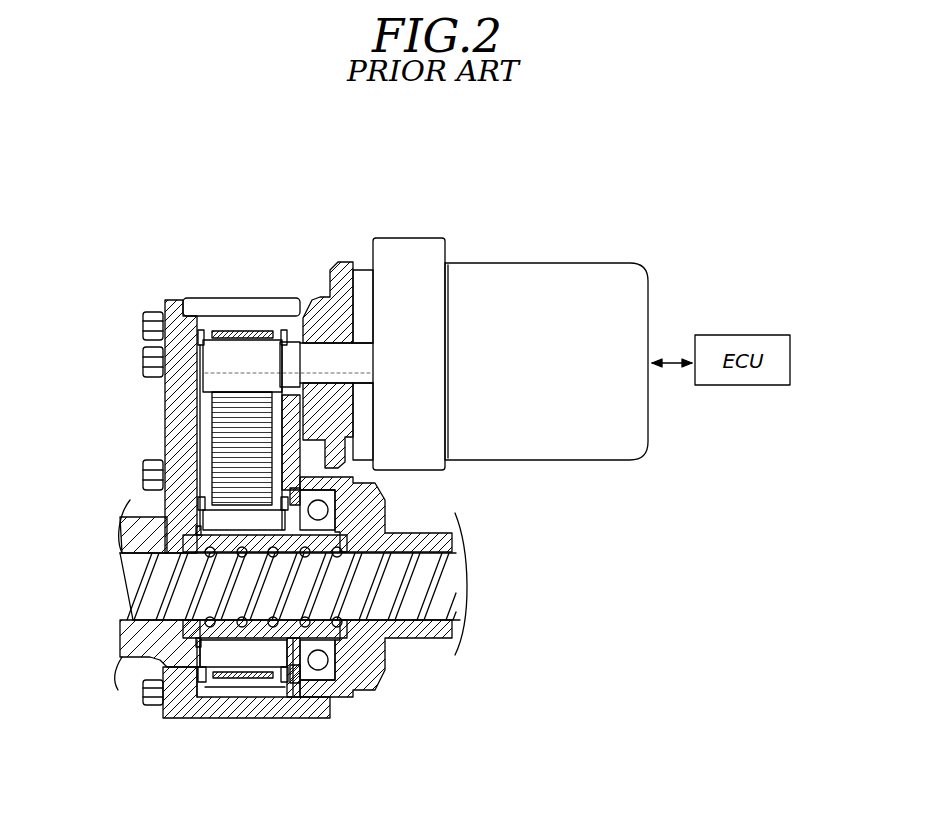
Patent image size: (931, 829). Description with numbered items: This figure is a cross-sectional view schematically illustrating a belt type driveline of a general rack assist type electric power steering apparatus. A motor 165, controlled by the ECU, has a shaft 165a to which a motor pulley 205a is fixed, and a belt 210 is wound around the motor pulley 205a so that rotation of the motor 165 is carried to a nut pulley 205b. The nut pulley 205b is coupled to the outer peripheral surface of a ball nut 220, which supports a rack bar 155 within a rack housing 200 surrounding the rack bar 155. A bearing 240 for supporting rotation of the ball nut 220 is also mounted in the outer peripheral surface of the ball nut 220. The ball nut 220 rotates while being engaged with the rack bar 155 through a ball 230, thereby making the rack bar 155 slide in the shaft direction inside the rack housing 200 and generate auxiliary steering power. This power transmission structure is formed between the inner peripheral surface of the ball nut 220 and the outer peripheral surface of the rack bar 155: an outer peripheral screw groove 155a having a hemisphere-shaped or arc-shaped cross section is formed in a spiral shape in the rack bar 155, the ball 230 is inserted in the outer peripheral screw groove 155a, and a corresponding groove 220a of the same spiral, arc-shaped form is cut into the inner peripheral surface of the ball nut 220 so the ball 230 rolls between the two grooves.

The rack bar 155 is at (140, 594).
The outer peripheral screw groove 155a is at (415, 605).
The motor 165 is at (543, 277).
The shaft of the motor 165a is at (328, 353).
The rack housing 200 is at (244, 718).
The motor pulley 205a is at (243, 352).
The nut pulley 205b is at (228, 680).
The belt 210 is at (213, 435).
The ball nut 220 is at (213, 533).
The groove 220a is at (293, 632).
The ball 230 is at (333, 653).
The bearing 240 is at (330, 512).